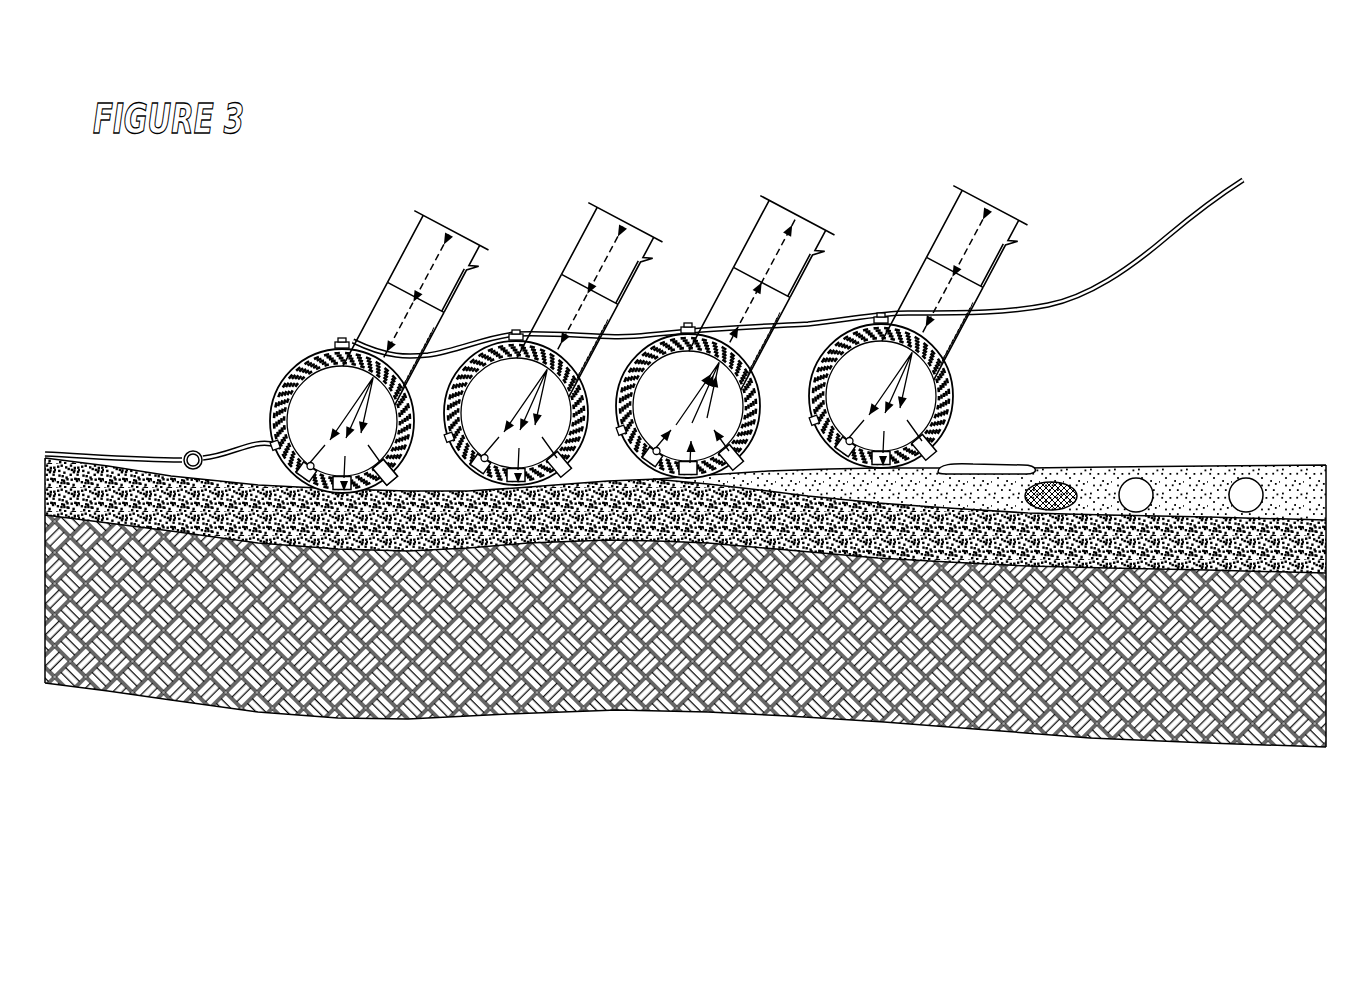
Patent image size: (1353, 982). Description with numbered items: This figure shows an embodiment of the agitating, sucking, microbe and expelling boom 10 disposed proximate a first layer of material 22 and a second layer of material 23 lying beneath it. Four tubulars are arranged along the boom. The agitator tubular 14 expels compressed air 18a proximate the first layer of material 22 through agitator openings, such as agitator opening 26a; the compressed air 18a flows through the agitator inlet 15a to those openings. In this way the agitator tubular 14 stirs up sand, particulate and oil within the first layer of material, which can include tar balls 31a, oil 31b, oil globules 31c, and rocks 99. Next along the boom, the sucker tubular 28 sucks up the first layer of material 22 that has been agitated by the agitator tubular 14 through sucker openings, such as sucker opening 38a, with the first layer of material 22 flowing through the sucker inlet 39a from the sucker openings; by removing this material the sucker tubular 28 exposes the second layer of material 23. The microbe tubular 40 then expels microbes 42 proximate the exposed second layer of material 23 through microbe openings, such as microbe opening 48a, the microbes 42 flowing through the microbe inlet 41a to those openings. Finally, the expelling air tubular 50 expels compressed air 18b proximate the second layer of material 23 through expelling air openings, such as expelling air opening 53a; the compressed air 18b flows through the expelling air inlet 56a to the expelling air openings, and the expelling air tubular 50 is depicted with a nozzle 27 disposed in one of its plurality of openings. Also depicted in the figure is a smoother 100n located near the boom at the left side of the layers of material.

The agitating, sucking, microbe and expelling boom 10 is at (283, 293).
The agitator tubular 14 is at (938, 371).
The agitator inlet 15a is at (915, 283).
The compressed air 18a is at (963, 243).
The compressed air 18b is at (423, 277).
The first layer of material 22 is at (1321, 457).
The second layer of material 23 is at (1321, 512).
The agitator opening 26a is at (838, 428).
The nozzle 27 is at (388, 464).
The sucker tubular 28 is at (770, 379).
The tar balls 31a is at (1130, 483).
The oil 31b is at (985, 459).
The oil globules 31c is at (1242, 480).
The sucker opening 38a is at (652, 450).
The sucker inlet 39a is at (720, 293).
The microbe tubular 40 is at (596, 386).
The microbe inlet 41a is at (548, 305).
The microbes 42 is at (597, 268).
The microbe opening 48a is at (468, 444).
The expelling air tubular 50 is at (424, 392).
The expelling air opening 53a is at (297, 450).
The expelling air inlet 56a is at (377, 312).
The rocks 99 is at (1050, 468).
The smoother 100n is at (113, 446).